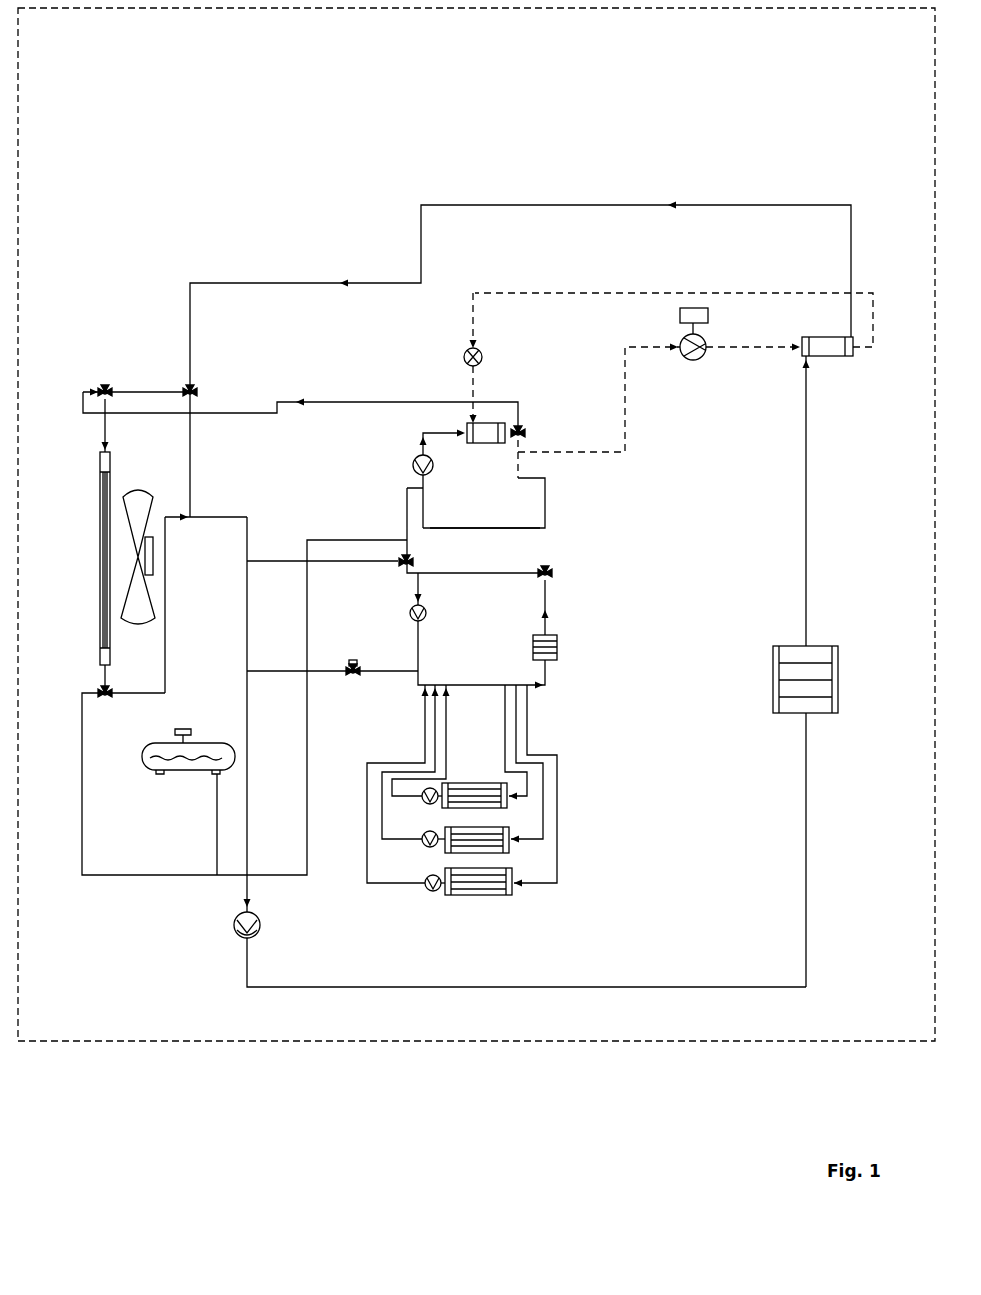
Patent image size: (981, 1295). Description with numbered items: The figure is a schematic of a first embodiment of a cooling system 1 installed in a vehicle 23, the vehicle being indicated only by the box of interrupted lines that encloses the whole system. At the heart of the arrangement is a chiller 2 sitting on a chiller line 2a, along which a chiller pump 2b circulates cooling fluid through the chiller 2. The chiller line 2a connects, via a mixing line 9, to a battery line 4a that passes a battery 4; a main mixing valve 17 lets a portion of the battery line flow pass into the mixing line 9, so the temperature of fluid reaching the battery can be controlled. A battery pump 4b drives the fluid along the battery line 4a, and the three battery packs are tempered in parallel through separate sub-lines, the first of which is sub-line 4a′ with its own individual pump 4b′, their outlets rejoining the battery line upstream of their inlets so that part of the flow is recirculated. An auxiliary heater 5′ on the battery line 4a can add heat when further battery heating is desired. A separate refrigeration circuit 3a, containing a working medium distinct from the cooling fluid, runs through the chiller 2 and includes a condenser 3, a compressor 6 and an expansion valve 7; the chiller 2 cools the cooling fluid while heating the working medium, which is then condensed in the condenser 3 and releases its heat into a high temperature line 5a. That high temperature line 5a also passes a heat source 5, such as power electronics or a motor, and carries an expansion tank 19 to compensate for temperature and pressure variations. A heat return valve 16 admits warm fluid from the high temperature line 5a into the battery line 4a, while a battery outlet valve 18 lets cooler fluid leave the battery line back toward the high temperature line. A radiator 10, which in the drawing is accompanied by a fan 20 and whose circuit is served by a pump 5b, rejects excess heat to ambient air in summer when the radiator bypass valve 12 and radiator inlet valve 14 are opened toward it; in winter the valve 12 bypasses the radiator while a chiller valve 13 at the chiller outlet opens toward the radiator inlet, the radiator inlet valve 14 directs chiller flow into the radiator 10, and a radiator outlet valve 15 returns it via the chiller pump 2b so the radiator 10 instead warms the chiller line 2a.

The cooling system 1 is at (270, 160).
The vehicle 23 is at (527, 8).
The chiller 2 is at (486, 443).
The chiller line 2a is at (545, 493).
The chiller pump 2b is at (418, 460).
The condenser 3 is at (822, 356).
The refrigeration circuit 3a is at (545, 293).
The battery 4 is at (513, 918).
The battery line 4a is at (418, 643).
The sub-line 4a′ is at (552, 883).
The battery pump 4b is at (410, 613).
The individual pump 4b′ is at (430, 890).
The heat source 5 is at (785, 645).
The high temperature line 5a is at (806, 555).
The radiator circuit pump 5b is at (260, 918).
The auxiliary heater 5′ is at (553, 635).
The compressor 6 is at (696, 360).
The expansion valve 7 is at (463, 362).
The mixing line 9 is at (523, 528).
The radiator 10 is at (100, 578).
The radiator bypass valve 12 is at (198, 392).
The chiller valve 13 is at (525, 428).
The radiator inlet valve 14 is at (106, 388).
The radiator outlet valve 15 is at (100, 688).
The heat return valve 16 is at (412, 556).
The main mixing valve 17 is at (553, 570).
The battery outlet valve 18 is at (355, 678).
The expansion tank 19 is at (171, 775).
The fan 20 is at (137, 488).